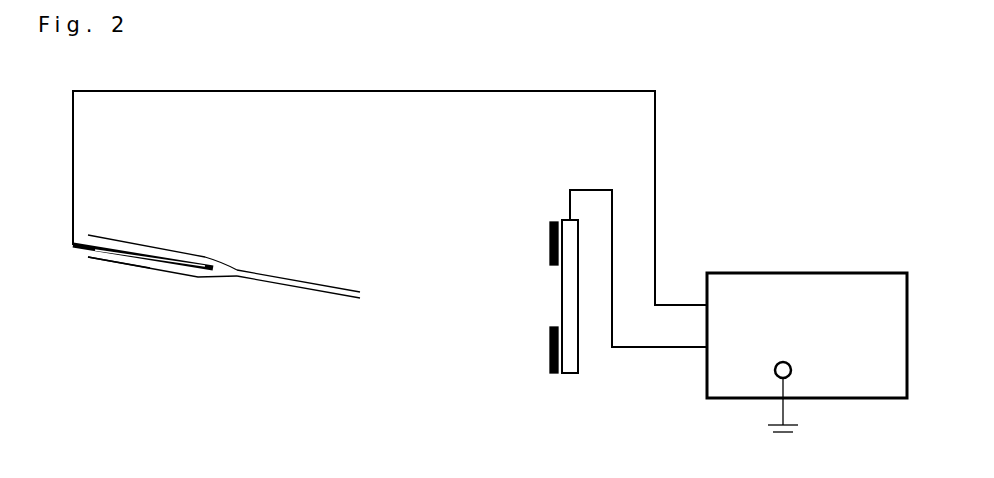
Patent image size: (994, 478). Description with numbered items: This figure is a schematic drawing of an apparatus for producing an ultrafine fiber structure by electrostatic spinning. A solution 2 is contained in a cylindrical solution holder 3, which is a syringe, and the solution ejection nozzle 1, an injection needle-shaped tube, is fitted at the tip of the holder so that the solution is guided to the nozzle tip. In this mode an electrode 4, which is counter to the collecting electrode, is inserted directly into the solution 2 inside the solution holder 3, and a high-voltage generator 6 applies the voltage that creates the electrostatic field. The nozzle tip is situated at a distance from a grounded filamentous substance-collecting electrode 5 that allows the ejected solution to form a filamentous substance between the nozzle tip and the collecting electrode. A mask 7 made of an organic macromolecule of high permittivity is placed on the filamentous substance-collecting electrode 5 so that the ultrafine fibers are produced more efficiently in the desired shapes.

The solution ejection nozzle 1 is at (320, 293).
The solution 2 is at (213, 272).
The solution holder 3 is at (195, 250).
The electrode 4 is at (85, 250).
The filamentous substance-collecting electrode 5 is at (580, 368).
The high-voltage generator 6 is at (777, 273).
The mask 7 is at (550, 368).